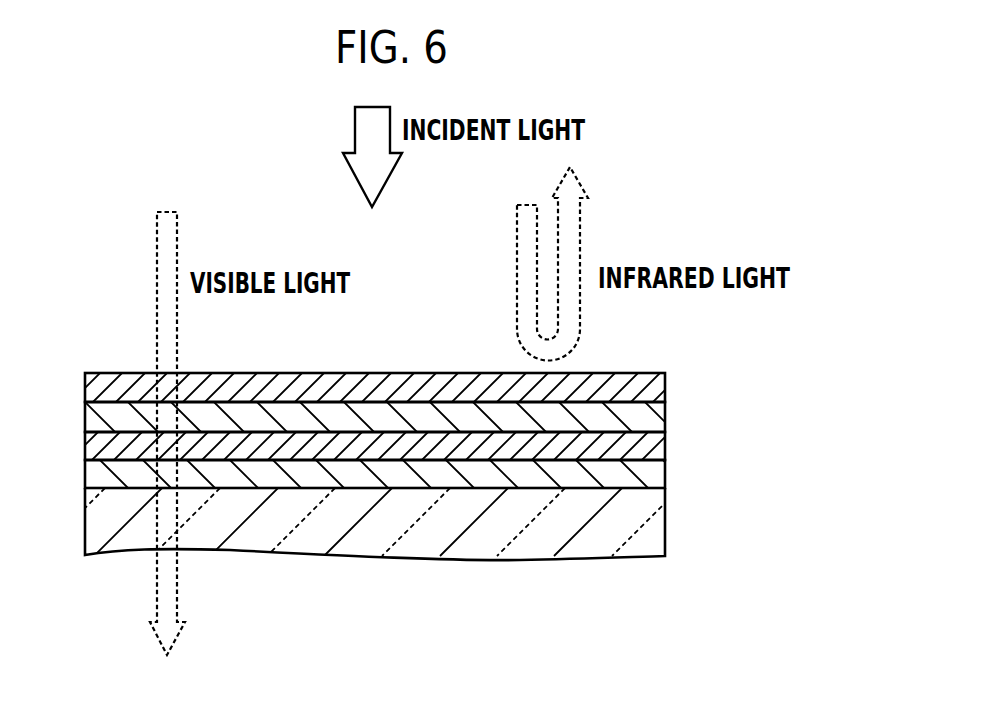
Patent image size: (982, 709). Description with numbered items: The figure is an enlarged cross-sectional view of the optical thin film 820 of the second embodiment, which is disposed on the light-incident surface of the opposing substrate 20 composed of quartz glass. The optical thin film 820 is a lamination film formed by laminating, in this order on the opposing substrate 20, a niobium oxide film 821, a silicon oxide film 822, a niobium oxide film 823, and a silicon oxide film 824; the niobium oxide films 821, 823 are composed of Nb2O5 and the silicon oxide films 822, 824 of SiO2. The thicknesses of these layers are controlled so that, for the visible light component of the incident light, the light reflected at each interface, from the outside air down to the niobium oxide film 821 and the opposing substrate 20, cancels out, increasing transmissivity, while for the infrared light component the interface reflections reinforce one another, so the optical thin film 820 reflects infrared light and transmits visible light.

The opposing substrate 20 is at (652, 539).
The optical thin film 820 is at (776, 369).
The niobium oxide film 821 is at (652, 479).
The silicon oxide film 822 is at (652, 449).
The niobium oxide film 823 is at (652, 420).
The silicon oxide film 824 is at (653, 389).